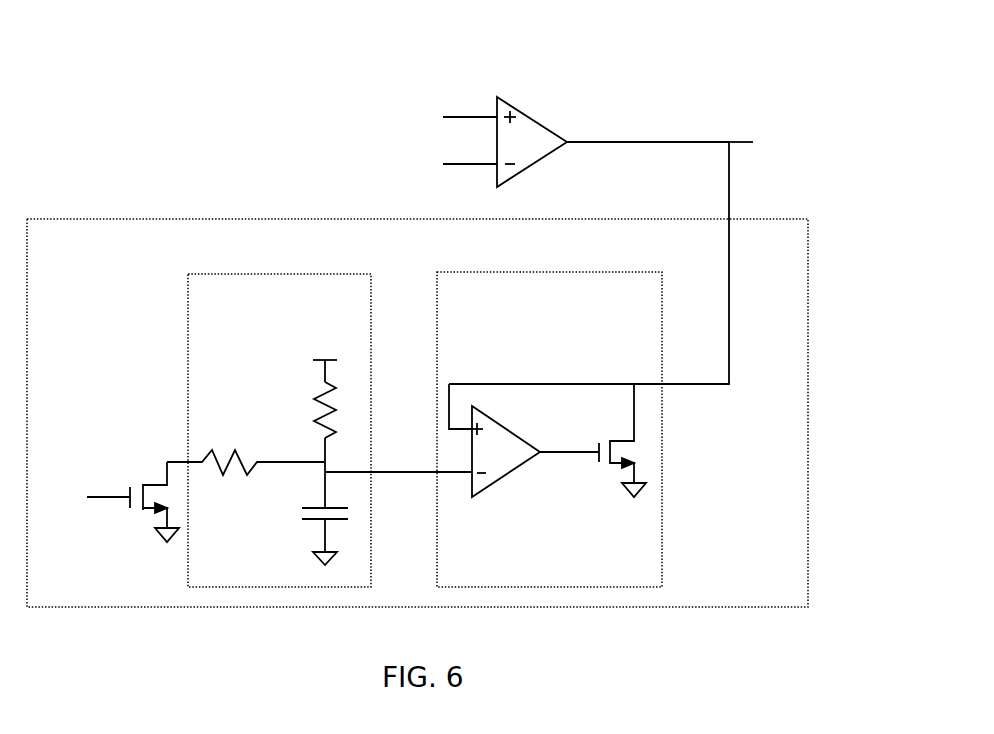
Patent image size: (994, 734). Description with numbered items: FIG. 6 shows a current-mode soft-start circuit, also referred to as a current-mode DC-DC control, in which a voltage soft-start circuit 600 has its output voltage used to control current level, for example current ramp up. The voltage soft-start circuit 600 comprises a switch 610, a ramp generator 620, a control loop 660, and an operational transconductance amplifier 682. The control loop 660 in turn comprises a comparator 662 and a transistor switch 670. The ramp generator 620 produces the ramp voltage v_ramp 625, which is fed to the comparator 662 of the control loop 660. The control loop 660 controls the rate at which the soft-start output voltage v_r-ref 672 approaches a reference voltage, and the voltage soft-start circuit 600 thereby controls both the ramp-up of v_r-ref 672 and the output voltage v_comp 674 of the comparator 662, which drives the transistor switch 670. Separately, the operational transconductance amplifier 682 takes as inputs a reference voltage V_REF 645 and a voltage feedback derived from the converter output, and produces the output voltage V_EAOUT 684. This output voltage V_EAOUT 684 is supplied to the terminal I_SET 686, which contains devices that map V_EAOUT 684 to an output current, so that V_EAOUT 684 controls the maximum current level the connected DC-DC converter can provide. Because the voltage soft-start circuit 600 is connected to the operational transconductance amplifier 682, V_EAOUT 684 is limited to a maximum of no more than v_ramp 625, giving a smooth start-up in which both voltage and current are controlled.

The voltage soft-start circuit 600 is at (80, 217).
The switch 610 is at (147, 477).
The ramp generator 620 is at (183, 290).
The ramp voltage v_ramp 625 is at (410, 513).
The reference voltage V_REF 645 is at (413, 107).
The control loop 660 is at (433, 283).
The comparator 662 is at (492, 490).
The transistor switch 670 is at (615, 430).
The output voltage v_r-ref 672 is at (708, 413).
The output voltage v_comp 674 is at (565, 487).
The operational transconductance amplifier 682 is at (540, 113).
The output voltage V_EAOUT 684 is at (612, 112).
The terminal I_SET 686 is at (790, 117).